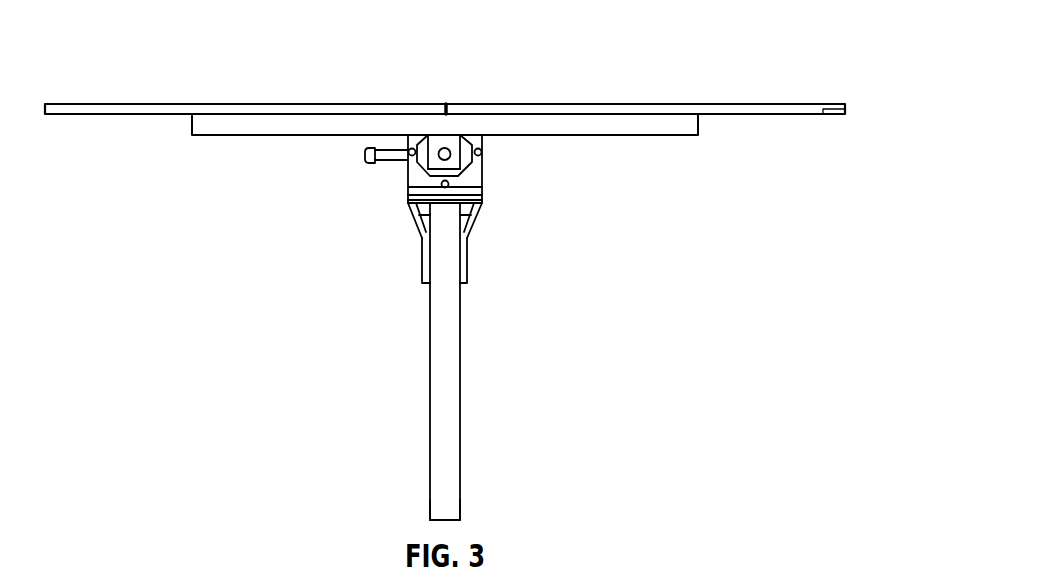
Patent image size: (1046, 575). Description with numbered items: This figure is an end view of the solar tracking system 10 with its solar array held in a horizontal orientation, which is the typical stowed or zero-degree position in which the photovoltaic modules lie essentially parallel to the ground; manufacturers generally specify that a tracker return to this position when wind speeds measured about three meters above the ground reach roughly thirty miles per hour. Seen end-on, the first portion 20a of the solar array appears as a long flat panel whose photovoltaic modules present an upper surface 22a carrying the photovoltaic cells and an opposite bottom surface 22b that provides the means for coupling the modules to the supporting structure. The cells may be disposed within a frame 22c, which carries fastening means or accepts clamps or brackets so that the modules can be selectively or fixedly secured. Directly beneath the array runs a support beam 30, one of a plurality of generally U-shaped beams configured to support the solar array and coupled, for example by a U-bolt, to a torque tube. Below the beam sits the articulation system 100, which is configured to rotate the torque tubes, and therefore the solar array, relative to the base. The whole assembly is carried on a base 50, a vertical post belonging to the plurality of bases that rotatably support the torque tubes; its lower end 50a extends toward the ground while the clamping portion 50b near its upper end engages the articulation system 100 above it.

The solar tracking system 10 is at (826, 22).
The first portion of the solar array 20a is at (88, 94).
The upper surface of the photovoltaic modules 22a is at (775, 103).
The bottom surface of the photovoltaic modules 22b is at (753, 114).
The frame 22c is at (822, 114).
The support beam 30 is at (668, 135).
The articulation system 100 is at (370, 214).
The base 50 is at (430, 378).
The column lower end 50a is at (418, 510).
The column clamp legs 50b is at (482, 256).